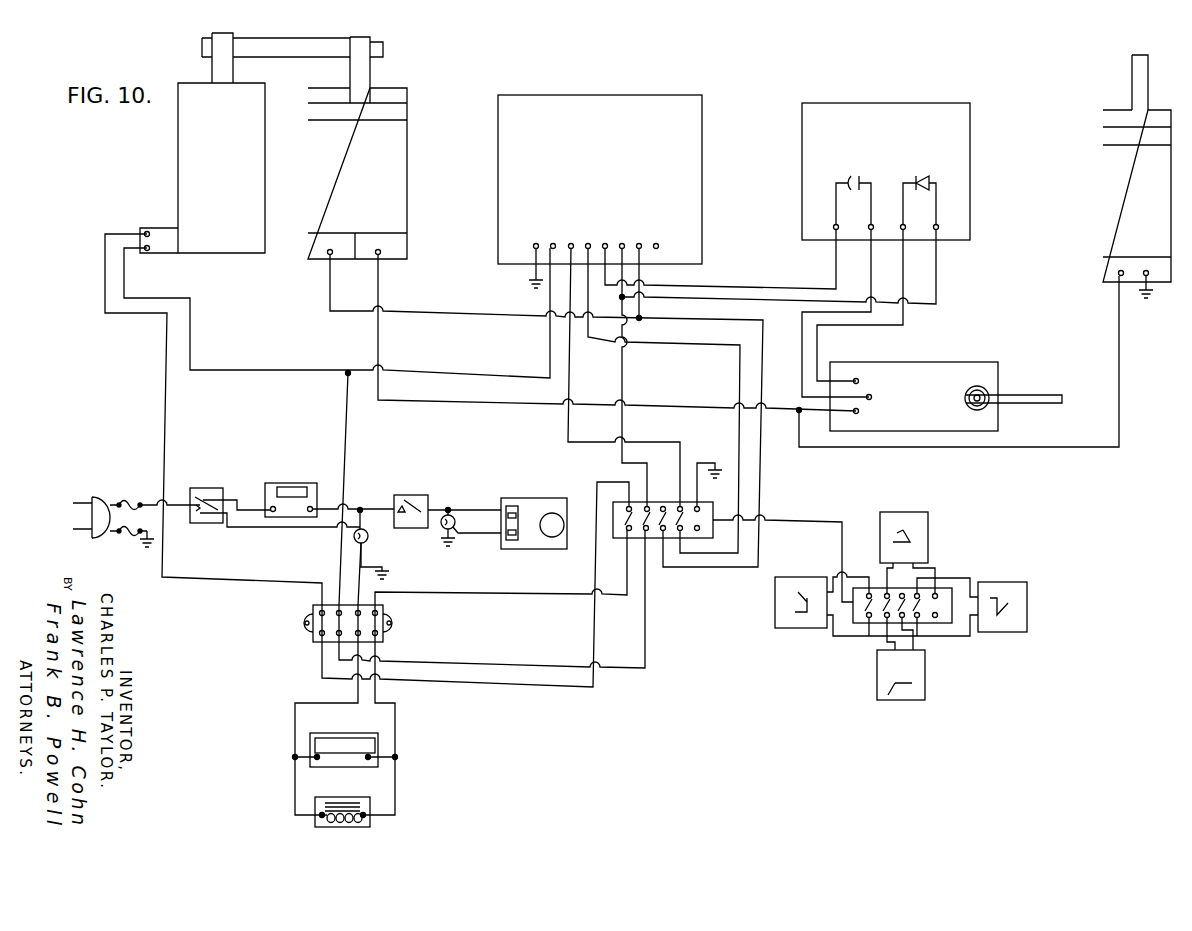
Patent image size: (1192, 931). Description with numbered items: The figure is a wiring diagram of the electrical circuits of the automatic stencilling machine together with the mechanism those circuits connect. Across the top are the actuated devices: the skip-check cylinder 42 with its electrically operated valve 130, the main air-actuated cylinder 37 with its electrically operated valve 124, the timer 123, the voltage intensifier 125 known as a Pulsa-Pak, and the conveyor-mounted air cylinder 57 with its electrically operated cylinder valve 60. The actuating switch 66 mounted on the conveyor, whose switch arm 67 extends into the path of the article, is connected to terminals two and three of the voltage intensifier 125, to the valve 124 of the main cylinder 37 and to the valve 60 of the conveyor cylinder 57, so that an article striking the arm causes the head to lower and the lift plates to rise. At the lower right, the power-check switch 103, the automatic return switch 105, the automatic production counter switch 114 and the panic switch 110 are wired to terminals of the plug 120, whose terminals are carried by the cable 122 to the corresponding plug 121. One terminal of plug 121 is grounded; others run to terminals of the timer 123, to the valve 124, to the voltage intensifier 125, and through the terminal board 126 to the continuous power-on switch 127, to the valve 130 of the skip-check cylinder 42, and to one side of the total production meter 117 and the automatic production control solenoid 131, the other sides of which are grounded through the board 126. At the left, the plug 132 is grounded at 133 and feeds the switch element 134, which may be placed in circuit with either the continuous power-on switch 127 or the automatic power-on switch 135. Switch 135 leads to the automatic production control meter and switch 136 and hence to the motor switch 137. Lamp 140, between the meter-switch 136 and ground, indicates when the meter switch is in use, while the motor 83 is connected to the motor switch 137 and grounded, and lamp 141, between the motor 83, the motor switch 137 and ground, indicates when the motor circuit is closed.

The skip-check cylinder 42 is at (178, 150).
The main air-actuated cylinder 37 is at (408, 138).
The electrically operated valve of the skip-check air cylinder 130 is at (157, 228).
The electrically operated valve of the main air cylinder 124 is at (322, 252).
The timer 123 is at (612, 161).
The voltage intensifier 125 is at (905, 147).
The air cylinder 57 is at (1103, 200).
The electrically operated cylinder valve 60 is at (1103, 272).
The switch 66 is at (948, 354).
The switch arm 67 is at (1038, 395).
The plug 132 is at (100, 502).
The ground 133 is at (143, 542).
The switch element 134 is at (194, 499).
The automatic power-on switch 135 is at (208, 497).
The continuous power-on switch 127 is at (206, 527).
The automatic production control meter and switch 136 is at (303, 483).
The motor switch 137 is at (418, 497).
The lamp 140 is at (371, 541).
The lamp 141 is at (457, 522).
The motor 83 is at (534, 523).
The plug 121 is at (698, 540).
The cable 122 is at (816, 503).
The power-check switch 103 is at (928, 532).
The automatic return switch 105 is at (1028, 600).
The panic switch 110 is at (785, 628).
The automatic production counter switch 114 is at (896, 700).
The plug 120 is at (952, 635).
The terminal board 126 is at (308, 628).
The total production meter 117 is at (350, 733).
The automatic production control solenoid 131 is at (355, 797).